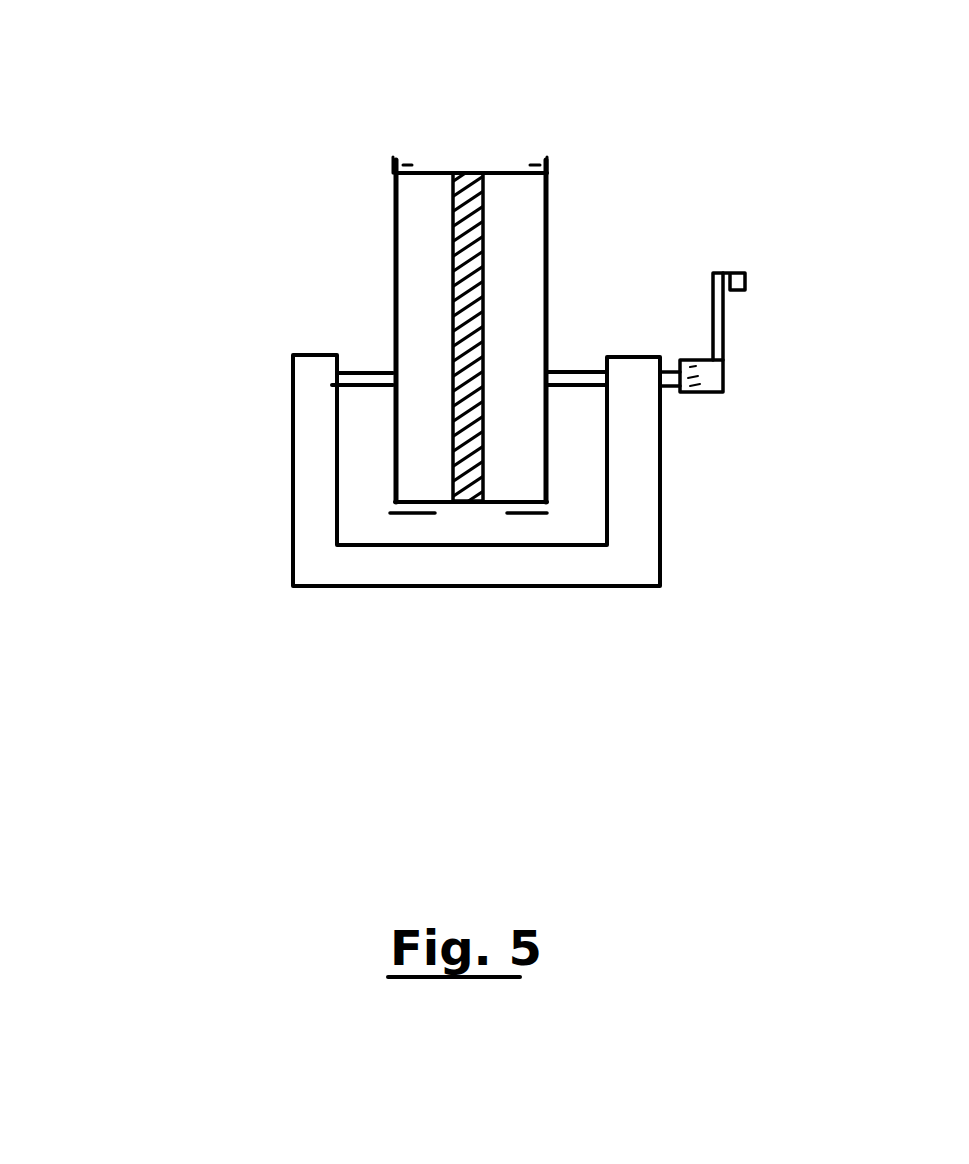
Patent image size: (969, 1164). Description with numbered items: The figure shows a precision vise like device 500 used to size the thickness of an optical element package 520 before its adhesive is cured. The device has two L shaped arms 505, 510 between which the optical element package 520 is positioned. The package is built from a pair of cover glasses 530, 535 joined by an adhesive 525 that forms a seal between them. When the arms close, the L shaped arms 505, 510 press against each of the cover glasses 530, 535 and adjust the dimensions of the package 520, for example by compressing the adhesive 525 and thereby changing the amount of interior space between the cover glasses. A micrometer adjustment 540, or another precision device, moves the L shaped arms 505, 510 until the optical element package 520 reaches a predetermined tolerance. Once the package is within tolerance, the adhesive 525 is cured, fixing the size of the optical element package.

The precision vise like device 500 is at (157, 562).
The L shaped arm 505 is at (378, 262).
The L shaped arm 510 is at (562, 247).
The optical element package 520 is at (512, 137).
The adhesive 525 is at (463, 192).
The cover glass 530 is at (428, 183).
The cover glass 535 is at (522, 182).
The micrometer adjustment 540 is at (688, 404).